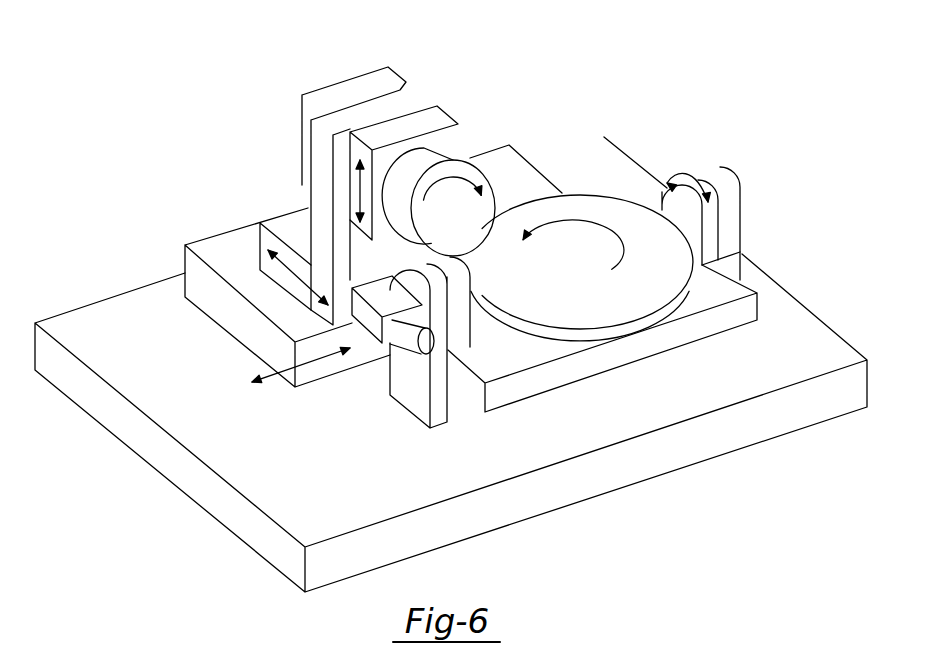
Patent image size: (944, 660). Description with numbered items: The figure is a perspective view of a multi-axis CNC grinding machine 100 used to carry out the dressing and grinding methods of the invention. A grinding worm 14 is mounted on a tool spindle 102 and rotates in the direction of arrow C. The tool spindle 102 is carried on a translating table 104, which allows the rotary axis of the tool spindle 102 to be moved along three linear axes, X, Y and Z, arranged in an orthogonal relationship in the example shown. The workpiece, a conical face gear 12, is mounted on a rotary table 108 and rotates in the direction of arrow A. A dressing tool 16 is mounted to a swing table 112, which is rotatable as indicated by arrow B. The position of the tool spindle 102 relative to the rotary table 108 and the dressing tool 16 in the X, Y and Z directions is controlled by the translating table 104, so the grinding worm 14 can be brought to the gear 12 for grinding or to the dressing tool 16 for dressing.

The multi-axis CNC grinding machine 100 is at (597, 98).
The tool spindle 102 is at (428, 150).
The translating table 104 is at (372, 112).
The rotary table 108 is at (619, 338).
The swing table 112 is at (372, 322).
The conical face gear 12 is at (582, 332).
The grinding worm 14 is at (462, 160).
The dressing tool 16 is at (338, 305).